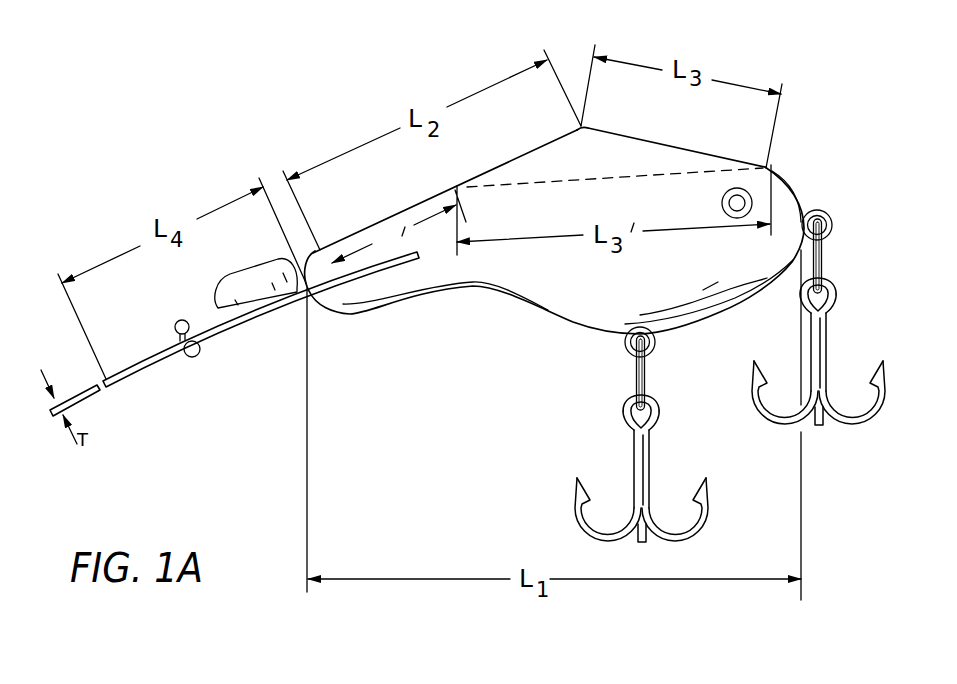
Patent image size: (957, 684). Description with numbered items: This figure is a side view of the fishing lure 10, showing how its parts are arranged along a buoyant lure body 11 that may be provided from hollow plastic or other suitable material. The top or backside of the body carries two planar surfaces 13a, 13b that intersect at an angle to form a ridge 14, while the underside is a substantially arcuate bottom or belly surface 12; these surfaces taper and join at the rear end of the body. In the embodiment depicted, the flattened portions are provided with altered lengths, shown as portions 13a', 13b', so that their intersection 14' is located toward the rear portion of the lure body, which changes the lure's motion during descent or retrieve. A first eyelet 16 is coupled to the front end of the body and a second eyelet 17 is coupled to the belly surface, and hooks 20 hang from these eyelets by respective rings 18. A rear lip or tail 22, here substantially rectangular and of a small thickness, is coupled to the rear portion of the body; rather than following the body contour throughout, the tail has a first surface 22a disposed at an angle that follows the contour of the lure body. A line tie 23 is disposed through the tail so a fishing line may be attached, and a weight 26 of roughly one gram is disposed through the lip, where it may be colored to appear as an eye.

The fishing lure 10 is at (814, 127).
The lure body 11 is at (808, 192).
The bottom or belly surface 12 is at (682, 328).
The planar surface 13a is at (445, 186).
The flattened portion of altered length 13a' is at (385, 219).
The flattened portion 13b is at (676, 135).
The flattened portion of altered length 13b' is at (615, 200).
The ridge 14 is at (603, 151).
The intersection 14' is at (436, 202).
The first eyelet 16 is at (832, 224).
The second eyelet 17 is at (625, 342).
The rings 18 is at (580, 383).
The hooks 20 is at (634, 449).
The rear lip or tail 22 is at (369, 266).
The first surface of tail 22a is at (153, 352).
The line tie 23 is at (181, 320).
The weight 26 is at (243, 271).